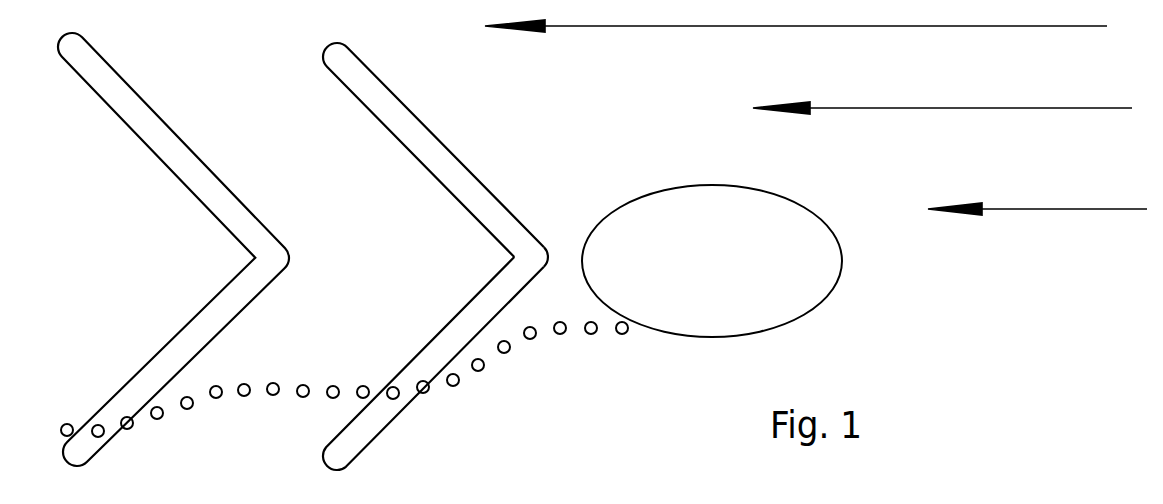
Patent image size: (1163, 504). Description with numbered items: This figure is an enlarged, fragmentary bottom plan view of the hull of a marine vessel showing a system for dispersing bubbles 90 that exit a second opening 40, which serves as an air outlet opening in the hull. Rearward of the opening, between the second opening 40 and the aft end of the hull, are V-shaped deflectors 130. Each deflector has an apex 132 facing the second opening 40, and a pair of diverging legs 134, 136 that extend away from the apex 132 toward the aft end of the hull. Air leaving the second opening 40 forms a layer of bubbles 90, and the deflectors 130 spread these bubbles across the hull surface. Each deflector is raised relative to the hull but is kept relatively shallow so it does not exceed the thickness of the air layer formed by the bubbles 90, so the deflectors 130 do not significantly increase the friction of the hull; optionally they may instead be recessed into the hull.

The V-shaped deflector 130 is at (327, 252).
The apex 132 is at (533, 252).
The diverging leg 134 is at (405, 134).
The diverging leg 136 is at (380, 417).
The bubbles 90 is at (506, 350).
The second opening 40 is at (772, 257).